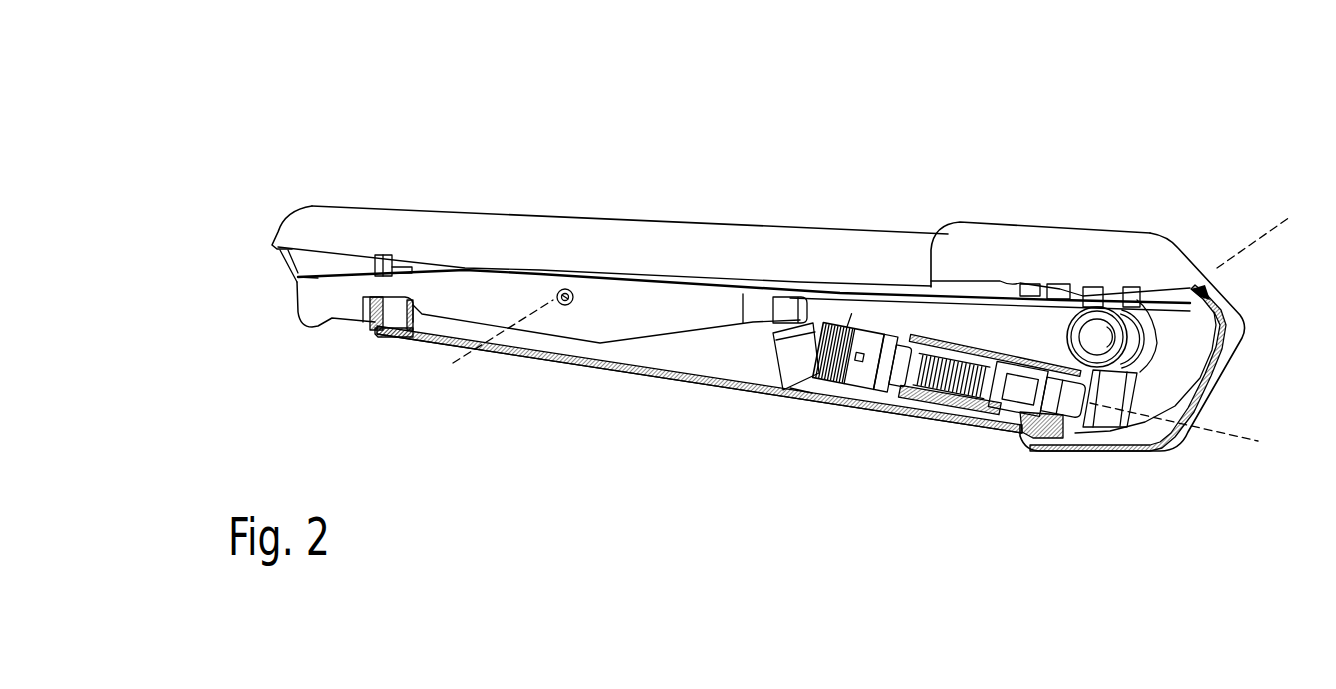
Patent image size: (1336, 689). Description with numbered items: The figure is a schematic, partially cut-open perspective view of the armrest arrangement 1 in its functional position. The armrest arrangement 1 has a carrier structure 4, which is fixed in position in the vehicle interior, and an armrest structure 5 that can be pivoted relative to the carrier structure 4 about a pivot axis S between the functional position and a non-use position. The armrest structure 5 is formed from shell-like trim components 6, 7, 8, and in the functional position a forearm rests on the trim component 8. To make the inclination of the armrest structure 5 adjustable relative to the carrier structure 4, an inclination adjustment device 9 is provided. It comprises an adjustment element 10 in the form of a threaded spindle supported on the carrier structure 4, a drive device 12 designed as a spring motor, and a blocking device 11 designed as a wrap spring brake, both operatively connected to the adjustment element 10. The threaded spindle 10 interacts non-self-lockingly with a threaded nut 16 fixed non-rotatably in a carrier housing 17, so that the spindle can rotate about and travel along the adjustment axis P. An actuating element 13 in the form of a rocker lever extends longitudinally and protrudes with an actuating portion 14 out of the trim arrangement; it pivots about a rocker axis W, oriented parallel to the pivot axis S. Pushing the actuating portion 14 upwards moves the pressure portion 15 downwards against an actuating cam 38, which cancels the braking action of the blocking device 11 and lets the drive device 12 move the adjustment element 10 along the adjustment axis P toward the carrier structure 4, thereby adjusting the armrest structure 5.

The armrest arrangement 1 is at (649, 108).
The carrier structure 4 is at (1097, 415).
The armrest structure 5 is at (466, 172).
The trim component 6 is at (642, 375).
The trim component 7 is at (1222, 328).
The trim component 8 is at (422, 217).
The inclination adjustment device 9 is at (727, 261).
The adjustment element 10 is at (947, 392).
The blocking device 11 is at (863, 430).
The drive device 12 is at (790, 383).
The actuating element 13 is at (455, 346).
The actuating portion 14 is at (343, 323).
The pressure portion 15 is at (787, 350).
The threaded nut 16 is at (1043, 412).
The carrier housing 17 is at (903, 395).
The actuating cam 38 is at (802, 397).
The pivot axis S is at (1263, 238).
The rocker axis W is at (500, 335).
The adjustment axis P is at (1226, 436).